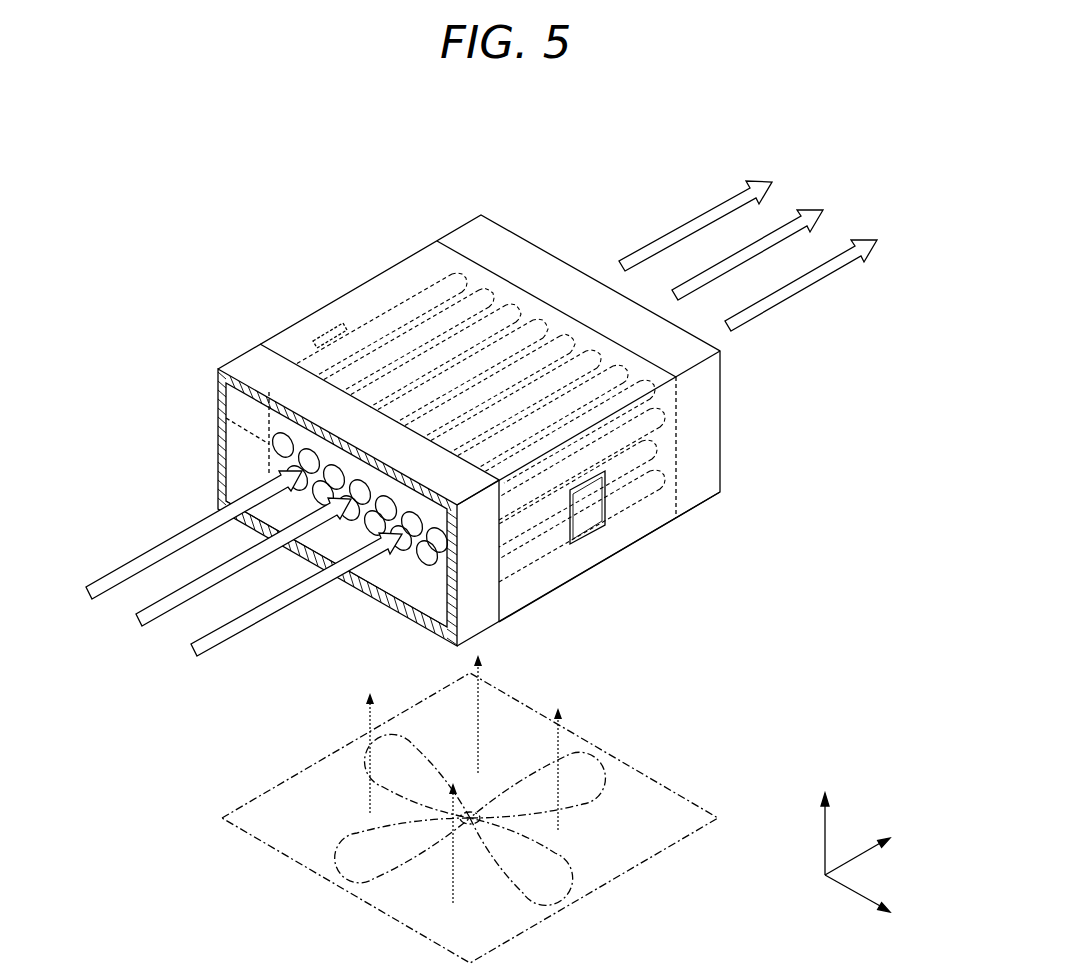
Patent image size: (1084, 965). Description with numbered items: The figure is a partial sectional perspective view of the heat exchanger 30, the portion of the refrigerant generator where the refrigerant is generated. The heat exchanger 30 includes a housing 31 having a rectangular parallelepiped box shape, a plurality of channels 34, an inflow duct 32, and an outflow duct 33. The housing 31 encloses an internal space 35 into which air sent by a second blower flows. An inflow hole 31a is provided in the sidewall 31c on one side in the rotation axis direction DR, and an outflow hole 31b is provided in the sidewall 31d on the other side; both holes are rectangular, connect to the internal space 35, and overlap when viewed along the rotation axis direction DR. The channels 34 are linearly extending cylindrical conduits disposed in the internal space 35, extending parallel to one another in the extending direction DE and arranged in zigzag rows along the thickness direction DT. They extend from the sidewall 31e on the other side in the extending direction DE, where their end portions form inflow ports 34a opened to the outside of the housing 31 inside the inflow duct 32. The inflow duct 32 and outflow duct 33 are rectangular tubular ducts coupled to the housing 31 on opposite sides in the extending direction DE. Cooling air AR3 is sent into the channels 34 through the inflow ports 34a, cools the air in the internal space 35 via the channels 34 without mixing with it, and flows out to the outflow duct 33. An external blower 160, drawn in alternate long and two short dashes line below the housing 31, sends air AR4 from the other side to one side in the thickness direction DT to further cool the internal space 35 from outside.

The heat exchanger 30 is at (452, 203).
The housing 31 is at (314, 301).
The inflow hole 31a is at (610, 503).
The outflow hole 31b is at (340, 333).
The sidewall 31c is at (663, 447).
The sidewall 31d is at (268, 392).
The sidewall 31e is at (418, 554).
The inflow duct 32 is at (250, 378).
The outflow duct 33 is at (508, 247).
The channels 34 is at (563, 340).
The inflow ports 34a is at (300, 472).
The internal space 35 is at (580, 548).
The external blower 160 is at (603, 885).
The cooling air AR3 is at (207, 653).
The air AR4 is at (368, 715).
The thickness direction DT is at (823, 823).
The extending direction DE is at (870, 850).
The rotation axis direction DR is at (871, 903).